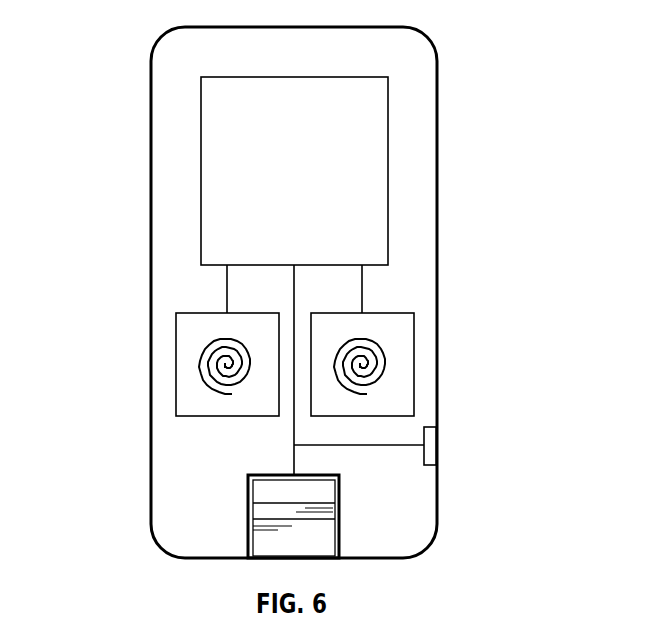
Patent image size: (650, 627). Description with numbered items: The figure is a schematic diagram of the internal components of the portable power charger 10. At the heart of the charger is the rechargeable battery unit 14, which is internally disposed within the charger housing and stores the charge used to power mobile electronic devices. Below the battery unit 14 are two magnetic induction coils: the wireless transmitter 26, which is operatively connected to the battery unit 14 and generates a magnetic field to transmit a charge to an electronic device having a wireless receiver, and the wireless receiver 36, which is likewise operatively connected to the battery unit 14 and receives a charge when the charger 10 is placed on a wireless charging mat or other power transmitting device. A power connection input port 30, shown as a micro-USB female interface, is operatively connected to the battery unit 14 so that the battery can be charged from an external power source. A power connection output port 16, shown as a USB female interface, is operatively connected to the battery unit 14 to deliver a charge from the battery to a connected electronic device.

The portable power charger 10 is at (100, 31).
The rechargeable battery unit 14 is at (368, 188).
The power connection output port 16 is at (284, 548).
The wireless transmitter 26 is at (177, 372).
The power connection input port 30 is at (432, 446).
The wireless receiver 36 is at (413, 372).